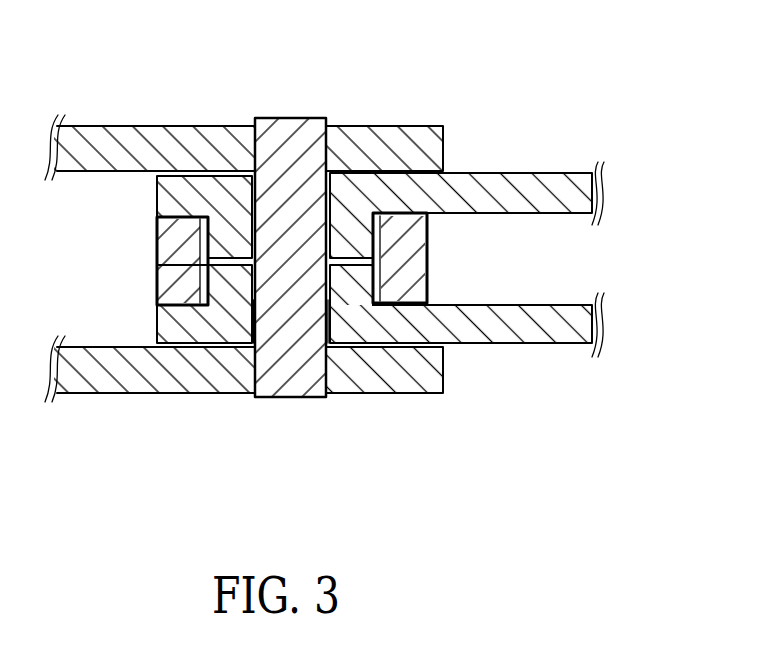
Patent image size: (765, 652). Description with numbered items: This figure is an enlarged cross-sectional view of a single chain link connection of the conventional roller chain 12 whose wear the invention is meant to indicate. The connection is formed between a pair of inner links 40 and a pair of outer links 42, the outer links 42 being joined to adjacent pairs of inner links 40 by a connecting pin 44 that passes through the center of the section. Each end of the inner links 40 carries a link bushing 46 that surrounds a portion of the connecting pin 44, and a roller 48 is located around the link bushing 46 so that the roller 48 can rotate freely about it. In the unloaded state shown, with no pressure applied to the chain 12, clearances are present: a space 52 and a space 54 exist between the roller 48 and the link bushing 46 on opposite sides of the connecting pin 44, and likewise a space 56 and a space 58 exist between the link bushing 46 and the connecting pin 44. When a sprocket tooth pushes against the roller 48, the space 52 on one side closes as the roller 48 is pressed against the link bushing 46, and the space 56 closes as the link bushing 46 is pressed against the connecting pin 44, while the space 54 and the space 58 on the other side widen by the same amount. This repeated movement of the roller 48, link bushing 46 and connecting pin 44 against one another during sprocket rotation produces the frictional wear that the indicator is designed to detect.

The roller chain 12 is at (390, 97).
The inner links 40 is at (560, 173).
The outer links 42 is at (182, 127).
The connecting pin 44 is at (280, 402).
The link bushing 46 is at (222, 282).
The roller 48 is at (428, 250).
The space 52 is at (202, 292).
The space 54 is at (378, 290).
The space 56 is at (253, 338).
The space 58 is at (330, 326).